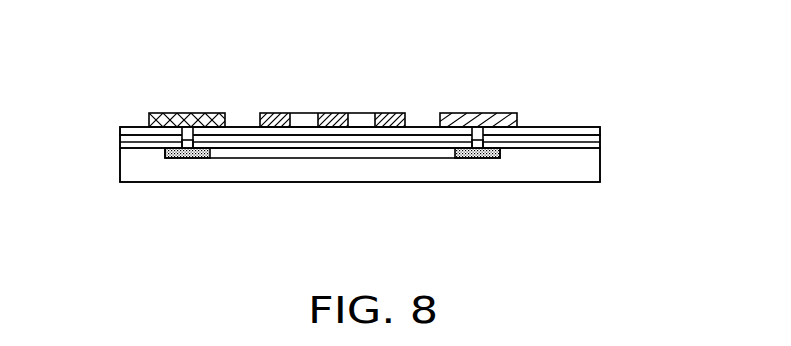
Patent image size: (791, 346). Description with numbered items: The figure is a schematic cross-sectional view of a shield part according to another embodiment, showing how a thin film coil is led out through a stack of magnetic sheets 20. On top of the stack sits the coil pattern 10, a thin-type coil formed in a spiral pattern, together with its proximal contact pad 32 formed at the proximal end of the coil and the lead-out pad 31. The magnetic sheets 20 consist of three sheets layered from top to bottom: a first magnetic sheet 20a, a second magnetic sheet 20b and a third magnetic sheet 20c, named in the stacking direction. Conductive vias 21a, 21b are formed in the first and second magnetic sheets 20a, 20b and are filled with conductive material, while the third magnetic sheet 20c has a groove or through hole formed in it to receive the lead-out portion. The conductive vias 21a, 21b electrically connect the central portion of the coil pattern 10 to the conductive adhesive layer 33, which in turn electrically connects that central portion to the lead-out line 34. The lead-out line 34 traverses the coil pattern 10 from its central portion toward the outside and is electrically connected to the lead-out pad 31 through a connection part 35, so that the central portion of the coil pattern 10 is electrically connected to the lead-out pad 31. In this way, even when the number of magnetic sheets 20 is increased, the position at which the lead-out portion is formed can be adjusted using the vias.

The coil pattern 10 is at (389, 113).
The magnetic sheets 20 is at (427, 150).
The first magnetic sheet 20a is at (598, 124).
The second magnetic sheet 20b is at (600, 143).
The third magnetic sheet 20c is at (597, 170).
The conductive via 21a is at (182, 134).
The conductive via 21b is at (182, 142).
The lead-out pad 31 is at (193, 113).
The proximal contact pad 32 is at (468, 120).
The conductive adhesive layer 33 is at (477, 158).
The lead-out line 34 is at (424, 150).
The connection part 35 is at (190, 159).